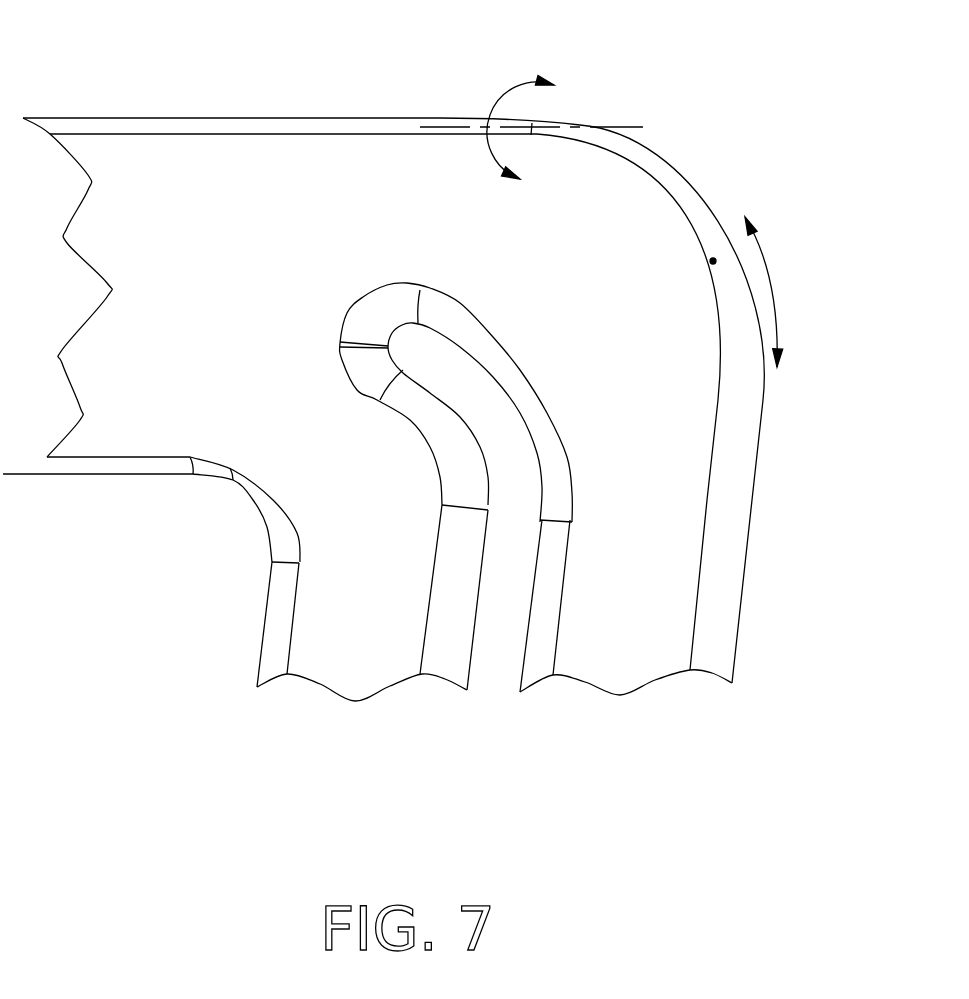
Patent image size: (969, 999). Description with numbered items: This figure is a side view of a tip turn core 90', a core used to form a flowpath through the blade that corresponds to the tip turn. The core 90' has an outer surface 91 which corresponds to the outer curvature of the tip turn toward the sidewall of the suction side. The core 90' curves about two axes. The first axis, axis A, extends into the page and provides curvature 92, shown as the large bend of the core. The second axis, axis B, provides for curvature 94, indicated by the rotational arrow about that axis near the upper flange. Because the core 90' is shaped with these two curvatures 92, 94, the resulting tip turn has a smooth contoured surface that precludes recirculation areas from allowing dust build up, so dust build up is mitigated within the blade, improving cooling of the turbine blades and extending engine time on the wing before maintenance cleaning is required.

The tip turn core 90' is at (383, 360).
The outer surface 91 is at (675, 170).
The curvature 92 is at (772, 290).
The curvature 94 is at (487, 115).
The first axis A is at (711, 260).
The second axis B is at (543, 127).